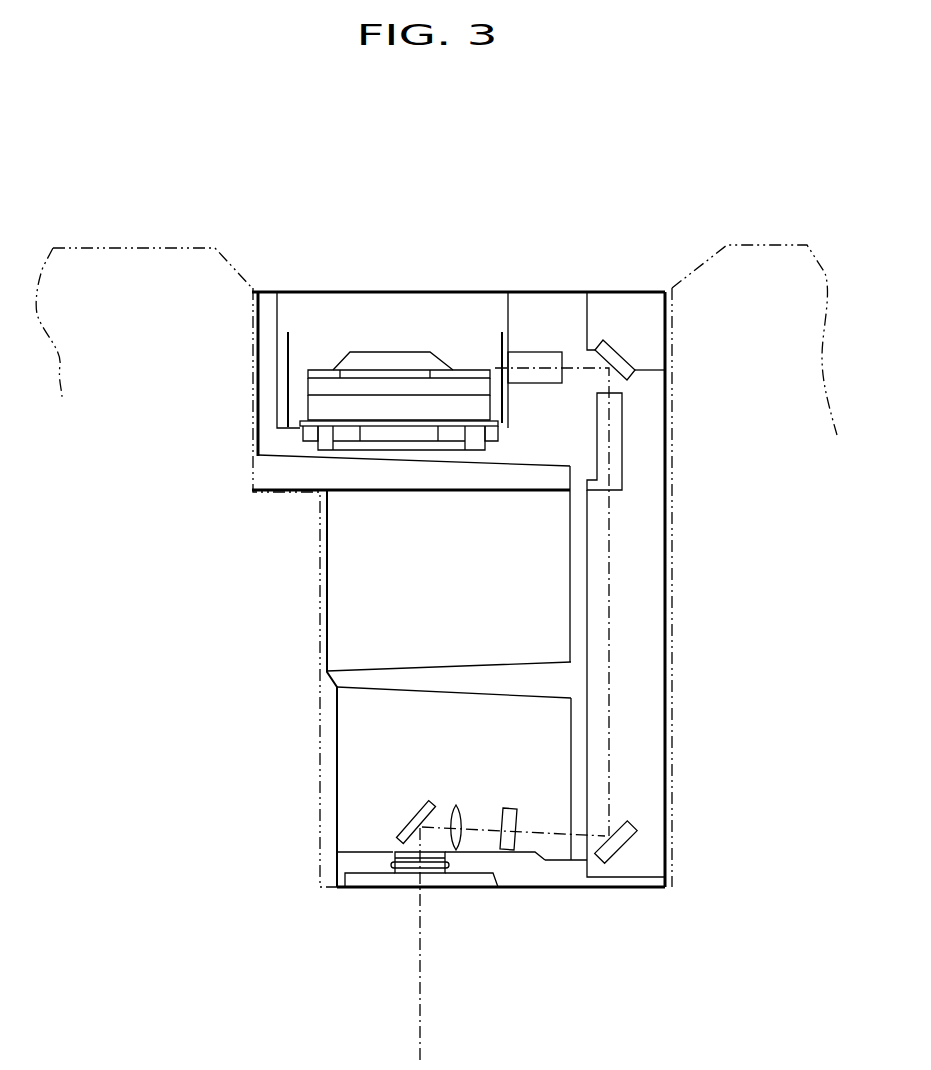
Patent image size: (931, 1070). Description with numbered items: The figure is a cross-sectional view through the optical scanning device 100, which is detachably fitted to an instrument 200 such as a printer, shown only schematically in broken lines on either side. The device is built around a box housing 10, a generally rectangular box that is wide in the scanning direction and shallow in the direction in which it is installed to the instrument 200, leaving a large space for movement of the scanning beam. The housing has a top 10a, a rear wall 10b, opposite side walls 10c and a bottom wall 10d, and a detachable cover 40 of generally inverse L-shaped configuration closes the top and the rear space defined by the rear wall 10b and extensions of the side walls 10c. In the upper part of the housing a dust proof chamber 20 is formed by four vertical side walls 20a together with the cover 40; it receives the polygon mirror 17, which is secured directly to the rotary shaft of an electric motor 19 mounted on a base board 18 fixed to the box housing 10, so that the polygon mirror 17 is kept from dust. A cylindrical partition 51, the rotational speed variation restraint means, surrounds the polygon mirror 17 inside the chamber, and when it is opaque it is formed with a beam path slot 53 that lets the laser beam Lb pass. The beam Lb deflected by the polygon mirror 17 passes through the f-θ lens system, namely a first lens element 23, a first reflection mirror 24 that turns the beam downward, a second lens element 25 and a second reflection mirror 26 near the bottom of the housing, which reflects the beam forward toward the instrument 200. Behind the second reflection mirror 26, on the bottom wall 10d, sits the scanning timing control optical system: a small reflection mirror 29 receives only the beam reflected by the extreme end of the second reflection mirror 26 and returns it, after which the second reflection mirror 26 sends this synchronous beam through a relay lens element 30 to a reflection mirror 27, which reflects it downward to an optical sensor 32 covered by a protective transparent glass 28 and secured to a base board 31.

The instrument 200 is at (135, 248).
The optical scanning device 100 is at (413, 268).
The box housing 10 is at (325, 525).
The top of the box housing 10a is at (617, 290).
The rear wall 10b is at (588, 717).
The side wall 10c is at (637, 648).
The bottom wall 10d is at (348, 852).
The dust proof chamber 20 is at (380, 303).
The side wall of dust proof chamber 20a is at (507, 303).
The cylindrical partition 51 is at (290, 337).
The beam path slot 53 is at (500, 365).
The polygon mirror 17 is at (308, 372).
The electric motor 19 is at (308, 392).
The base board 18 is at (308, 410).
The first lens element 23 is at (542, 352).
The first reflection mirror 24 is at (630, 380).
The detachable cover 40 is at (672, 363).
The second lens element 25 is at (623, 473).
The laser beam Lb is at (612, 557).
The second reflection mirror 26 is at (627, 845).
The reflection mirror 27 is at (417, 810).
The relay lens element 30 is at (455, 805).
The reflection mirror 29 is at (512, 808).
The optical sensor 32 is at (403, 855).
The protective transparent glass 28 is at (433, 866).
The base board 31 is at (385, 880).